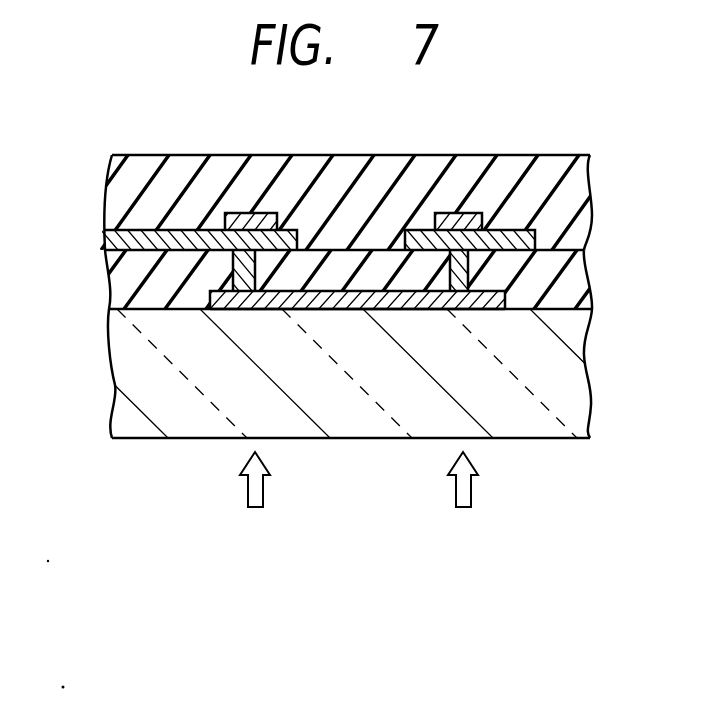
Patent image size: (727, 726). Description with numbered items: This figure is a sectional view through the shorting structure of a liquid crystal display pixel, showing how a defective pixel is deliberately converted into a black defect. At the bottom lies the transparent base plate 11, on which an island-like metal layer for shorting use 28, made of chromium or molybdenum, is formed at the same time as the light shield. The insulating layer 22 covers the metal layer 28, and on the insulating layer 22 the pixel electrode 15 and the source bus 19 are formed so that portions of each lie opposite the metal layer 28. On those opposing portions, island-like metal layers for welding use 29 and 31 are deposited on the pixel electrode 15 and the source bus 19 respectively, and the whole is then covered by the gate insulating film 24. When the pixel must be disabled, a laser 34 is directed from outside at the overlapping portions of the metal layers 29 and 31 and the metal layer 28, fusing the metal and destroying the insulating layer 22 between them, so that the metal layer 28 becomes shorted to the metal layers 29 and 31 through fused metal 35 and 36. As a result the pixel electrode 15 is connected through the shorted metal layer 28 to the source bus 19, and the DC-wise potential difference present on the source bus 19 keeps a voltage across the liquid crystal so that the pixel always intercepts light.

The transparent base plate 11 is at (566, 405).
The pixel electrode 15 is at (127, 227).
The source bus 19 is at (530, 246).
The insulating layer 22 is at (557, 267).
The gate insulating film 24 is at (425, 175).
The metal layer for shorting use 28 is at (485, 312).
The metal layer for welding use 29 is at (248, 213).
The metal layer for welding use 31 is at (482, 211).
The laser 34 is at (497, 497).
The fused metal 35 is at (240, 267).
The fused metal 36 is at (468, 268).